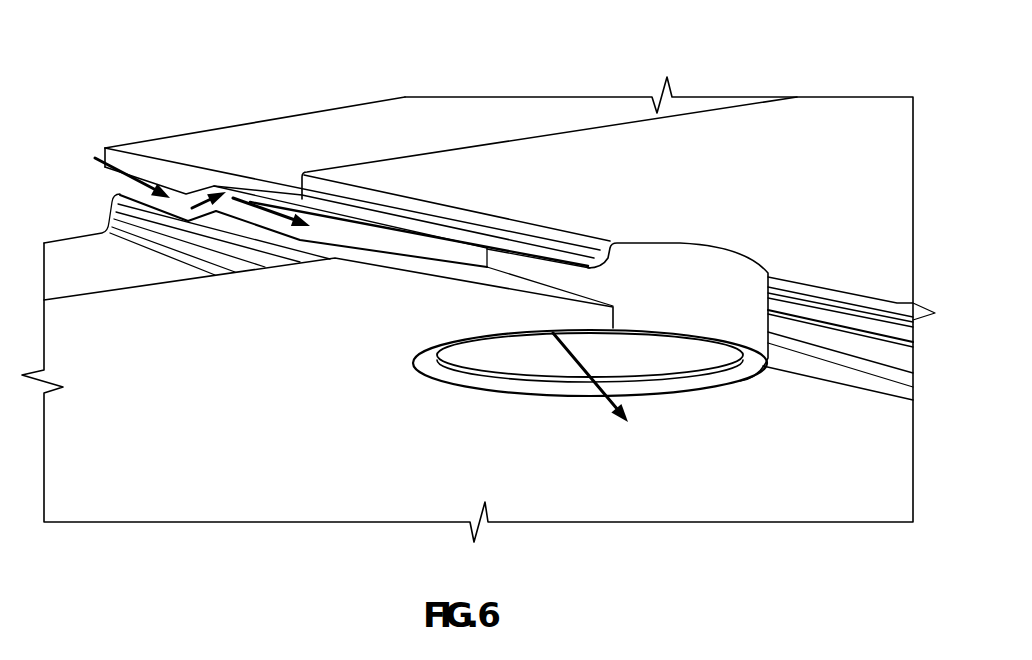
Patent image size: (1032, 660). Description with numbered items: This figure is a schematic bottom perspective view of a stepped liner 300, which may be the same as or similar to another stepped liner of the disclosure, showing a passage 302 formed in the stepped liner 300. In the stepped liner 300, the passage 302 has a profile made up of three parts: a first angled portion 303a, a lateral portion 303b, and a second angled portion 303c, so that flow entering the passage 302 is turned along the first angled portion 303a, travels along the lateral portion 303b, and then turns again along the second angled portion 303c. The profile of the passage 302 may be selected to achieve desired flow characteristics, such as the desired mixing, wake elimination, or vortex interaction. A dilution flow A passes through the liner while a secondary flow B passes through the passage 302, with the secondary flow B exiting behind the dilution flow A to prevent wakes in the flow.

The stepped liner 300 is at (116, 58).
The passage 302 is at (155, 213).
The first angled portion 303a is at (122, 185).
The lateral portion 303b is at (212, 212).
The second angled portion 303c is at (288, 219).
The dilution flow A is at (612, 398).
The secondary flow B is at (110, 165).